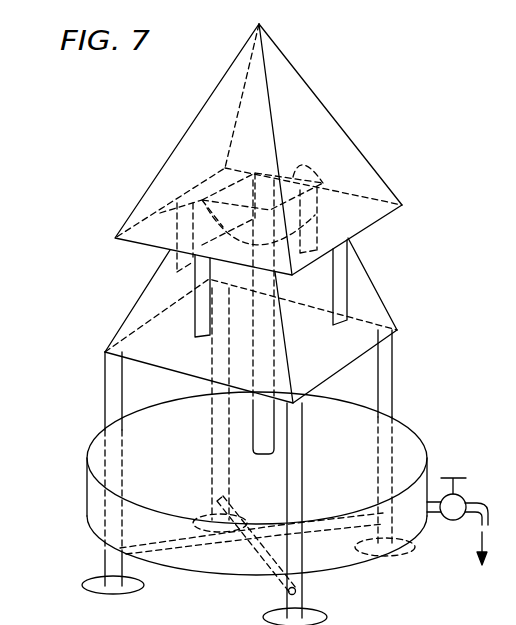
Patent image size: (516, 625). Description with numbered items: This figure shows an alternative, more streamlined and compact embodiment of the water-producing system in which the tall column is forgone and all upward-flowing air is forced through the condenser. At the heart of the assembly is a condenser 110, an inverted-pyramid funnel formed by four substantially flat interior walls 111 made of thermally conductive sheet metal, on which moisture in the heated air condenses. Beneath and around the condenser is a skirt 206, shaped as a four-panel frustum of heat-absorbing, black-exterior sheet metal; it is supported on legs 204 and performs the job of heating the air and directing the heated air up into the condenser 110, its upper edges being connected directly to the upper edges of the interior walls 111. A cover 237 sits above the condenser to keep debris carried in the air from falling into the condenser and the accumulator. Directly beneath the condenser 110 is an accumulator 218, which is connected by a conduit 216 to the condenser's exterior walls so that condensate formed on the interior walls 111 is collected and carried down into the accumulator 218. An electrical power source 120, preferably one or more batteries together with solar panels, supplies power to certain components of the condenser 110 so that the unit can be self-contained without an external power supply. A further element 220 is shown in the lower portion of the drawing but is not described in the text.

The cover 237 is at (290, 73).
The electrical power source 120 is at (293, 177).
The interior walls 111 is at (232, 176).
The condenser 110 is at (172, 249).
The skirt 206 is at (138, 303).
The legs 204 is at (210, 361).
The accumulator 218 is at (410, 426).
The conduit 216 is at (252, 440).
The pipes 220 is at (250, 545).